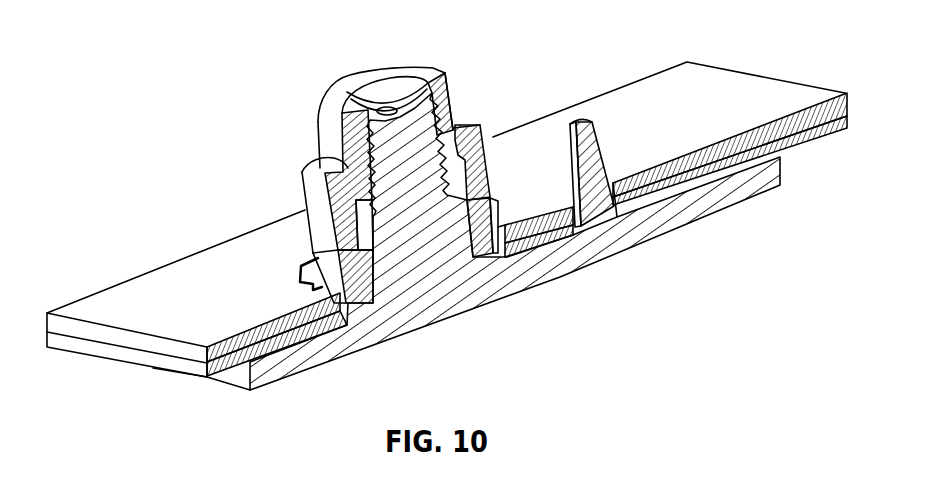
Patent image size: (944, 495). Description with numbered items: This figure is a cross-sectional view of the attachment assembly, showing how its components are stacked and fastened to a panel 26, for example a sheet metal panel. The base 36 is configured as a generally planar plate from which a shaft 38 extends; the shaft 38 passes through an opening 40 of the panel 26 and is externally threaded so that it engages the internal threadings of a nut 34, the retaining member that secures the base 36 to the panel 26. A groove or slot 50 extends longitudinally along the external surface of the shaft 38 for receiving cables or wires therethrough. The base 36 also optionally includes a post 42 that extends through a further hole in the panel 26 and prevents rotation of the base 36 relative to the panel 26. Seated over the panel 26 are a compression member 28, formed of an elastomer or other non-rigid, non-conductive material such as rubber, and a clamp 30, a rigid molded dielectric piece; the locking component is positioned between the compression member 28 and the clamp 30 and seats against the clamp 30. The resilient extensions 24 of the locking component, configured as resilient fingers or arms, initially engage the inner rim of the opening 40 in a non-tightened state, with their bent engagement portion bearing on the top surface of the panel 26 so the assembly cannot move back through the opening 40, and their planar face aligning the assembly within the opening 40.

The resilient extensions 24 is at (307, 257).
The panel 26 is at (757, 88).
The compression member 28 is at (500, 207).
The clamp 30 is at (483, 155).
The nut 34 is at (449, 100).
The base 36 is at (615, 234).
The shaft 38 is at (359, 117).
The opening 40 is at (307, 283).
The post 42 is at (590, 146).
The slot 50 is at (383, 117).